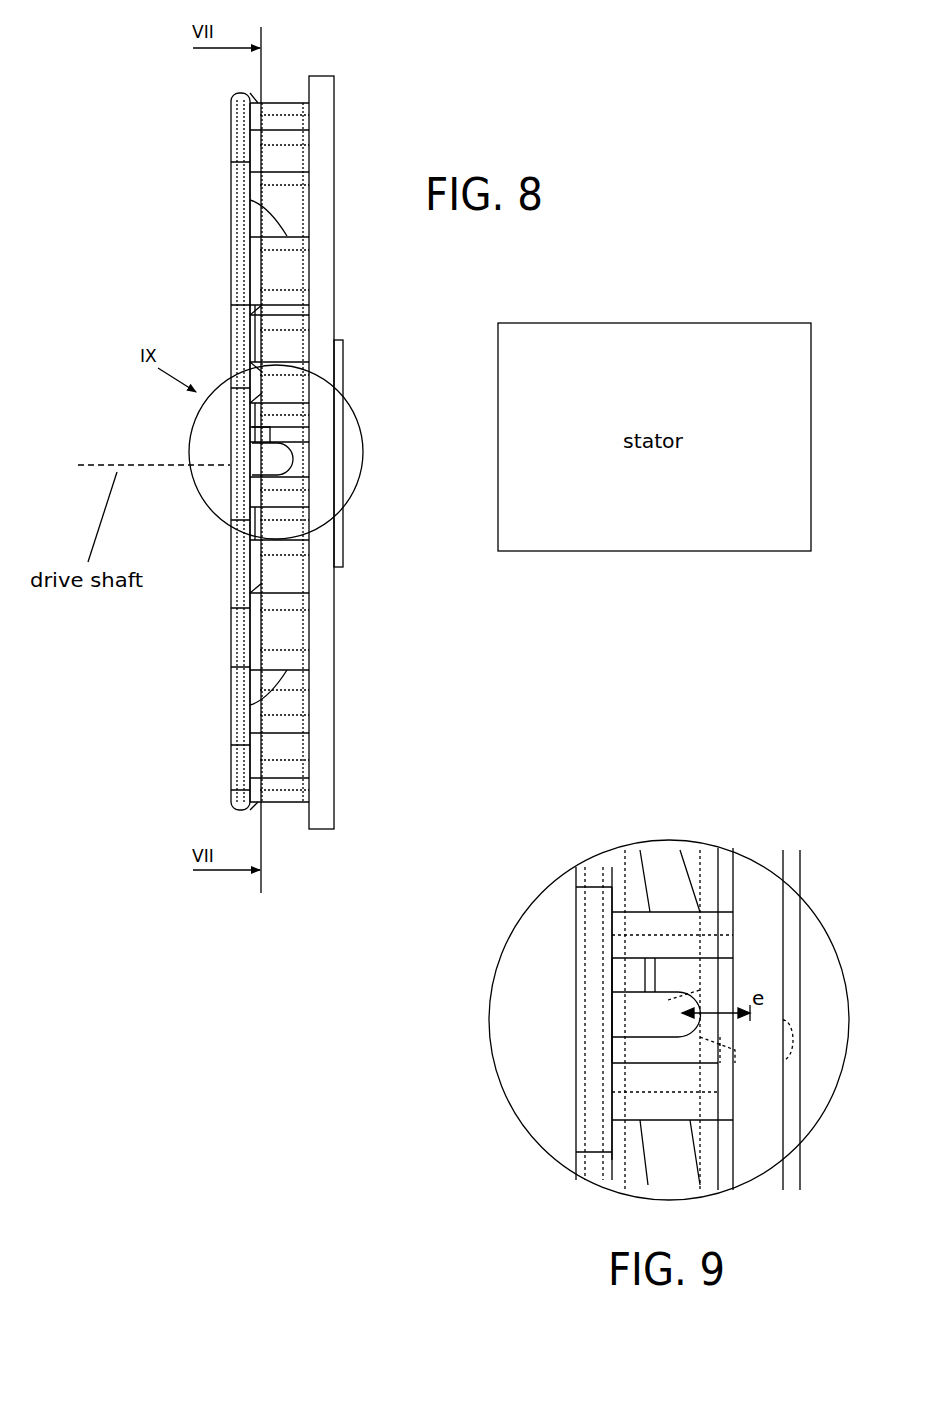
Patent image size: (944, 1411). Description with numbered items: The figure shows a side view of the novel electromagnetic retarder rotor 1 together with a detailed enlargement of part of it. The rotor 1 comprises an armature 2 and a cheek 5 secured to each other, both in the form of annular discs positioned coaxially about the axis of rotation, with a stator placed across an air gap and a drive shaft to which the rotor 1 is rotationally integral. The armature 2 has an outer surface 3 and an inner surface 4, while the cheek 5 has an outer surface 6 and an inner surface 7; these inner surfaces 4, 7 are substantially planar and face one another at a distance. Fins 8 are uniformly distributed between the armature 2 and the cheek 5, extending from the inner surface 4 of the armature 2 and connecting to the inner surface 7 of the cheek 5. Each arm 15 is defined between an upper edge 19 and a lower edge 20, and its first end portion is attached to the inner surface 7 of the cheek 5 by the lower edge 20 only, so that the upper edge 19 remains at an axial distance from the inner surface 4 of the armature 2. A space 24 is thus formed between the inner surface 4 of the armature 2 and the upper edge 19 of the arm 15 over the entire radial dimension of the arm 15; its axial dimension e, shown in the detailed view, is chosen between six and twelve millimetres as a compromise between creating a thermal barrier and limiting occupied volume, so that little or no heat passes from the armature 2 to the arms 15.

In FIG. 8, the rotor 1 is at (368, 146).
In FIG. 8, the armature 2 is at (338, 265).
In FIG. 8, the outer surface 3 is at (338, 717).
In FIG. 9, the outer surface 3 is at (795, 935).
In FIG. 9, the inner surface 4 is at (715, 870).
In FIG. 8, the cheek 5 is at (228, 272).
In FIG. 9, the outer surface 6 is at (579, 1148).
In FIG. 9, the inner surface 7 is at (612, 1162).
In FIG. 9, the fins 8 is at (634, 896).
In FIG. 8, the arm 15 is at (256, 466).
In FIG. 9, the arm 15 is at (612, 980).
In FIG. 9, the upper edge 19 is at (700, 1035).
In FIG. 9, the lower edge 20 is at (625, 1010).
In FIG. 8, the space 24 is at (304, 455).
In FIG. 9, the space 24 is at (708, 988).